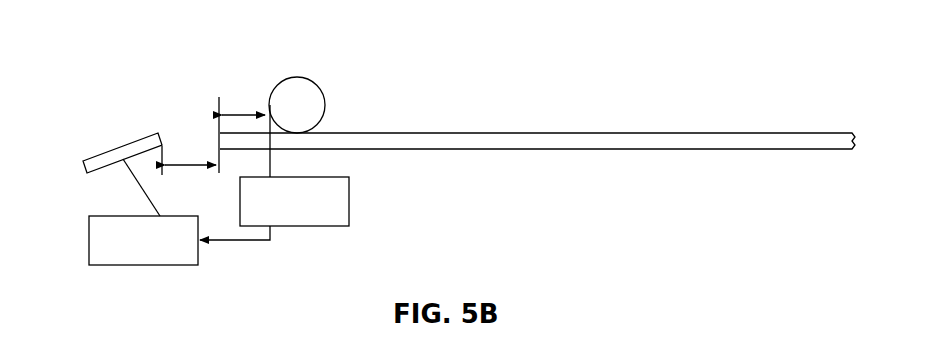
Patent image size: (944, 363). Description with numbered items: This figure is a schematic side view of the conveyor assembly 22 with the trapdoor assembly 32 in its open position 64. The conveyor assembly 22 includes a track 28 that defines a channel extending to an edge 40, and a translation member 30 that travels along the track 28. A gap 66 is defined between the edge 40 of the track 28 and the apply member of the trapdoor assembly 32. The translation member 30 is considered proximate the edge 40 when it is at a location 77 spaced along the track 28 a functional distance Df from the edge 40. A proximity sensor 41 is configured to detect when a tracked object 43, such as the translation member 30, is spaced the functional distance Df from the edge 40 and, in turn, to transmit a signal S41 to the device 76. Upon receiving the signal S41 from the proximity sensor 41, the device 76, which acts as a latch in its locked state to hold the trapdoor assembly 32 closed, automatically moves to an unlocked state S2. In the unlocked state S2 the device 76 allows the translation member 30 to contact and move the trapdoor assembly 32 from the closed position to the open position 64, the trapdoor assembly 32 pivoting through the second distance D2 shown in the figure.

The conveyor assembly 22 is at (511, 111).
The track 28 is at (592, 137).
The translation member 30 is at (307, 96).
The trapdoor assembly 32 is at (118, 151).
The edge 40 is at (218, 139).
The proximity sensor 41 is at (310, 216).
The tracked object 43 is at (289, 63).
The open position 64 is at (148, 122).
The gap 66 is at (173, 99).
The device 76 is at (133, 226).
The location 77 is at (271, 126).
The functional distance Df is at (243, 112).
The second distance D2 is at (197, 167).
The signal S41 is at (236, 241).
The unlocked state S2 is at (154, 278).